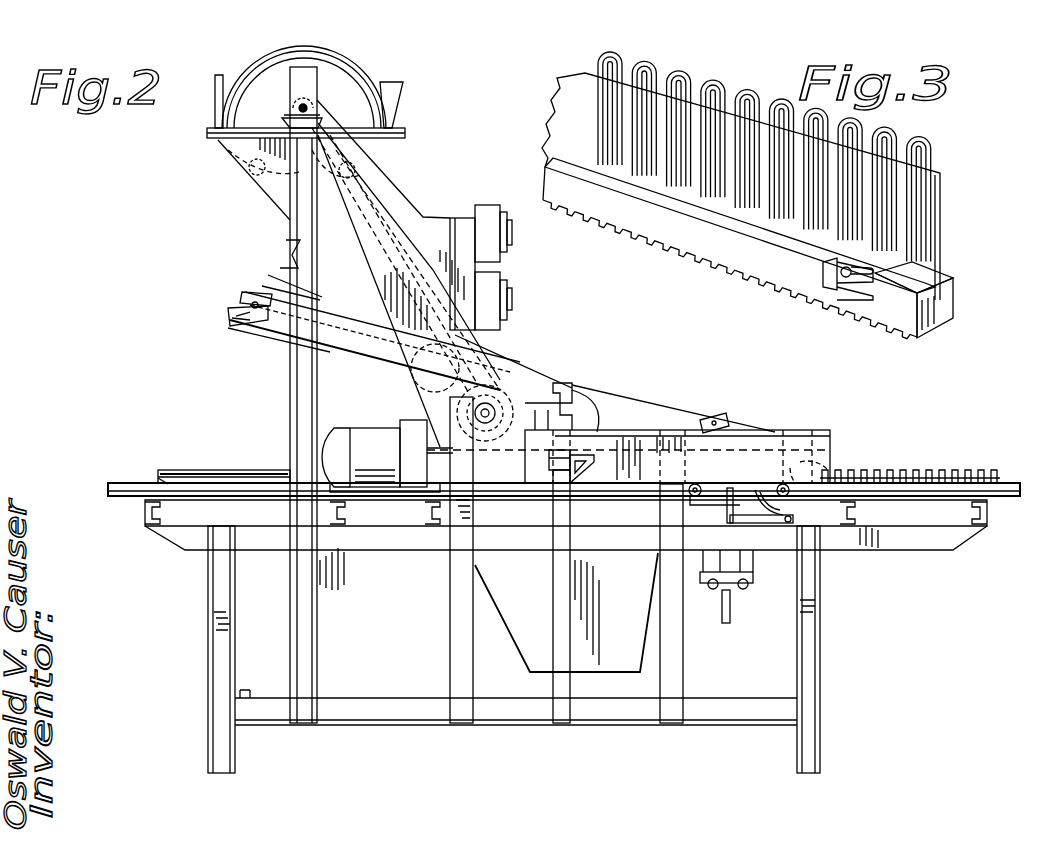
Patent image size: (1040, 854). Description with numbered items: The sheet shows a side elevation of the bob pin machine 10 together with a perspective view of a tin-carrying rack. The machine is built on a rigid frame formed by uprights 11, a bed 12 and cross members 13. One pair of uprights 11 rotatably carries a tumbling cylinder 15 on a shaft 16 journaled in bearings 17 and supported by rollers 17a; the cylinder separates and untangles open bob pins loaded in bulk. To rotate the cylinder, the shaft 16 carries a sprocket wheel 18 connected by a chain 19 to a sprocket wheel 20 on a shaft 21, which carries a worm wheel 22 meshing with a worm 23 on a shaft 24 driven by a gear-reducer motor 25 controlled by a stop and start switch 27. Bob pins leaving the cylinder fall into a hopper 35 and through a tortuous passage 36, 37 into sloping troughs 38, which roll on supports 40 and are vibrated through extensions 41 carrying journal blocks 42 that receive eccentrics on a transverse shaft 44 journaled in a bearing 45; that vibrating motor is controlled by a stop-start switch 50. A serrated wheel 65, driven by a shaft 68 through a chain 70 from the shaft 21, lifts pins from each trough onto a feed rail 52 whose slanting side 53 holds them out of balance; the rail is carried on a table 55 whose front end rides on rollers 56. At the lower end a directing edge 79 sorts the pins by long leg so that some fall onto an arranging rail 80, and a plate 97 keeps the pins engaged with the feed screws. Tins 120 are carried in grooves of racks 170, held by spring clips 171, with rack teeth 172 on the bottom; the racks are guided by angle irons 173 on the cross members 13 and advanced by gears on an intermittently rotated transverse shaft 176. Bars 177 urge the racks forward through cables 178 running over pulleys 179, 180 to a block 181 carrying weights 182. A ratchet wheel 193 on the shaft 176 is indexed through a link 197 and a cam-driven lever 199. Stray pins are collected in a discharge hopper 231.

In FIG. 2, the bob pin machine 10 is at (283, 382).
In FIG. 2, the uprights 11 is at (290, 400).
In FIG. 2, the bed 12 is at (366, 550).
In FIG. 2, the cross members 13 is at (158, 513).
In FIG. 2, the tumbling cylinder 15 is at (236, 168).
In FIG. 2, the shaft 16 is at (298, 105).
In FIG. 2, the bearings 17 is at (290, 112).
In FIG. 2, the rollers 17a is at (252, 177).
In FIG. 2, the sprocket wheel 18 is at (312, 96).
In FIG. 2, the chain 19 is at (410, 239).
In FIG. 2, the sprocket wheel 20 is at (520, 420).
In FIG. 2, the shaft 21 is at (462, 392).
In FIG. 2, the worm wheel 22 is at (538, 467).
In FIG. 2, the worm 23 is at (493, 475).
In FIG. 2, the shaft 24 is at (440, 455).
In FIG. 2, the motor 25 is at (338, 430).
In FIG. 2, the stop and start switch 27 is at (512, 303).
In FIG. 2, the hopper 35 is at (390, 101).
In FIG. 2, the tortuous passage 36 is at (312, 232).
In FIG. 2, the tortuous passage 37 is at (293, 243).
In FIG. 2, the sloping troughs 38 is at (286, 282).
In FIG. 2, the supports 40 is at (350, 344).
In FIG. 2, the extensions 41 is at (252, 294).
In FIG. 2, the journal blocks 42 is at (238, 301).
In FIG. 2, the transverse shaft 44 is at (242, 316).
In FIG. 2, the bearing 45 is at (258, 322).
In FIG. 2, the stop-start switch 50 is at (512, 236).
In FIG. 2, the feed rail 52 is at (522, 378).
In FIG. 2, the slanting side 53 is at (545, 385).
In FIG. 2, the table 55 is at (570, 392).
In FIG. 2, the rollers 56 is at (588, 430).
In FIG. 2, the serrated wheel 65 is at (405, 374).
In FIG. 2, the shaft 68 is at (410, 393).
In FIG. 2, the chain 70 is at (425, 406).
In FIG. 2, the directing edge 79 is at (606, 396).
In FIG. 2, the arranging rail 80 is at (612, 410).
In FIG. 2, the plate 97 is at (720, 418).
In FIG. 2, the tins 120 is at (246, 476).
In FIG. 3, the tins 120 is at (580, 112).
In FIG. 2, the rack 170 is at (944, 476).
In FIG. 3, the rack 170 is at (718, 250).
In FIG. 3, the spring clips 171 is at (842, 292).
In FIG. 3, the rack teeth 172 is at (784, 296).
In FIG. 2, the angle irons 173 is at (226, 497).
In FIG. 2, the transverse shaft 176 is at (780, 462).
In FIG. 2, the bars 177 is at (158, 478).
In FIG. 2, the cables 178 is at (198, 476).
In FIG. 2, the pulley 179 is at (696, 483).
In FIG. 2, the pulley 180 is at (748, 589).
In FIG. 2, the block 181 is at (752, 580).
In FIG. 2, the weights 182 is at (731, 612).
In FIG. 2, the ratchet wheel 193 is at (778, 484).
In FIG. 2, the link 197 is at (765, 525).
In FIG. 2, the lever 199 is at (725, 520).
In FIG. 2, the discharge hopper 231 is at (522, 648).